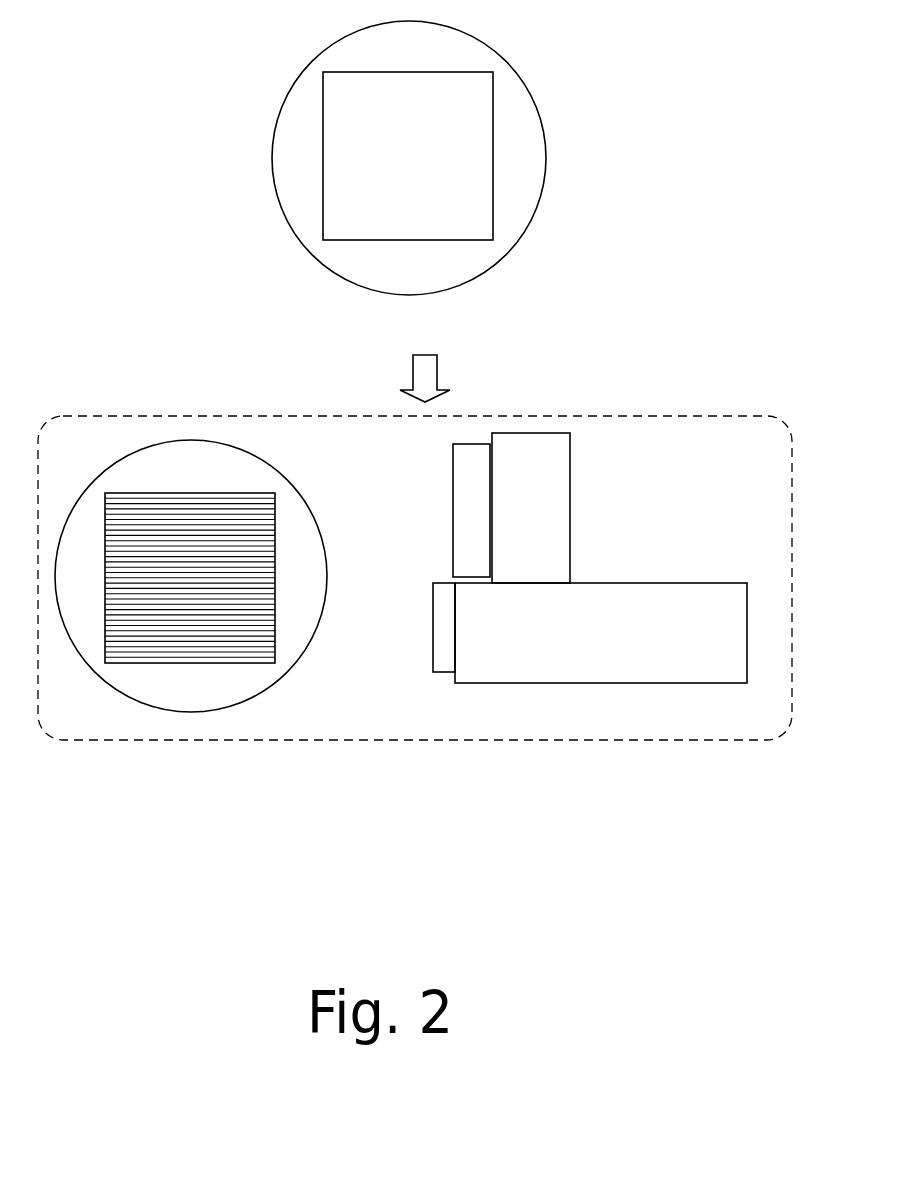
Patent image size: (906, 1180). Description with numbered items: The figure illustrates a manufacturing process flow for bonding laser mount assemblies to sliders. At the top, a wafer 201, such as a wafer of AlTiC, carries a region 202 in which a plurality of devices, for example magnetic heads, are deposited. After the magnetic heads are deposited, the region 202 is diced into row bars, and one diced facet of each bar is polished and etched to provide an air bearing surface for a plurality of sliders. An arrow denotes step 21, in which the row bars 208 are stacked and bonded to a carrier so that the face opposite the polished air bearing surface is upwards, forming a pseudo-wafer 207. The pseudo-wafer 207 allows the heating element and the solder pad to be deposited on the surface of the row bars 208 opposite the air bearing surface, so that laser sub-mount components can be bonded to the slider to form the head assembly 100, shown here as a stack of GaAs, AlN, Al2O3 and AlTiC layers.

The wafer 201 is at (533, 98).
The region of the wafer 202 is at (398, 118).
The step 21 is at (438, 380).
The pseudo-wafer 207 is at (169, 475).
The row bars 208 is at (169, 549).
The head assembly 100 is at (404, 478).